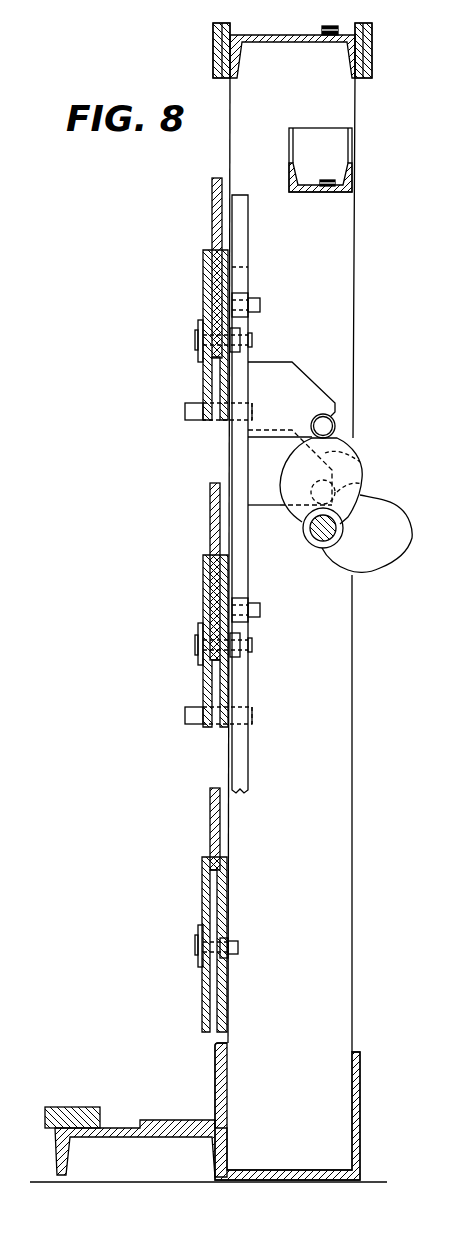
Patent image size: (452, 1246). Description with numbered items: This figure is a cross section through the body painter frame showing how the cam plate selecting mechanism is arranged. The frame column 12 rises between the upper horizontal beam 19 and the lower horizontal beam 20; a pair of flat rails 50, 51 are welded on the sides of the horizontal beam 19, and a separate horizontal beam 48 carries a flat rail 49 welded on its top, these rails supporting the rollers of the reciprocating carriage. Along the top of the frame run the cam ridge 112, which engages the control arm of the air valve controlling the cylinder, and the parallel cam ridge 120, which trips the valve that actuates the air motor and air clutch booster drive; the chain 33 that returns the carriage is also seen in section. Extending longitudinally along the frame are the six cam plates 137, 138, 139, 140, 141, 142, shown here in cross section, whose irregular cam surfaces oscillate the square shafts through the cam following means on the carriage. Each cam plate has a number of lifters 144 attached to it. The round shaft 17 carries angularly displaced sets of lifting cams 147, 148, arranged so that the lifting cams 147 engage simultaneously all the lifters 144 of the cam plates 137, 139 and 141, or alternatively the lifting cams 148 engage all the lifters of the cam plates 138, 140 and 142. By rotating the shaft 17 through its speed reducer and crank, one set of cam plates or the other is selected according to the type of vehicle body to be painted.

The column 12 is at (345, 330).
The round shaft 17 is at (310, 531).
The horizontal beam 19 is at (277, 42).
The lower horizontal beam 20 is at (360, 1102).
The chain 33 is at (335, 27).
The horizontal beam 48 is at (113, 1128).
The flat rail 49 is at (76, 1107).
The flat rail 50 is at (213, 60).
The flat rail 51 is at (372, 61).
The cam ridge 112 is at (372, 33).
The cam ridge 120 is at (213, 31).
The cam plate 137 is at (202, 877).
The cam plate 138 is at (210, 792).
The cam plate 139 is at (203, 584).
The cam plate 140 is at (210, 500).
The cam plate 141 is at (203, 272).
The cam plate 142 is at (212, 196).
The lifter 144 is at (323, 404).
The lifting cam 147 is at (407, 537).
The lifting cam 148 is at (352, 491).